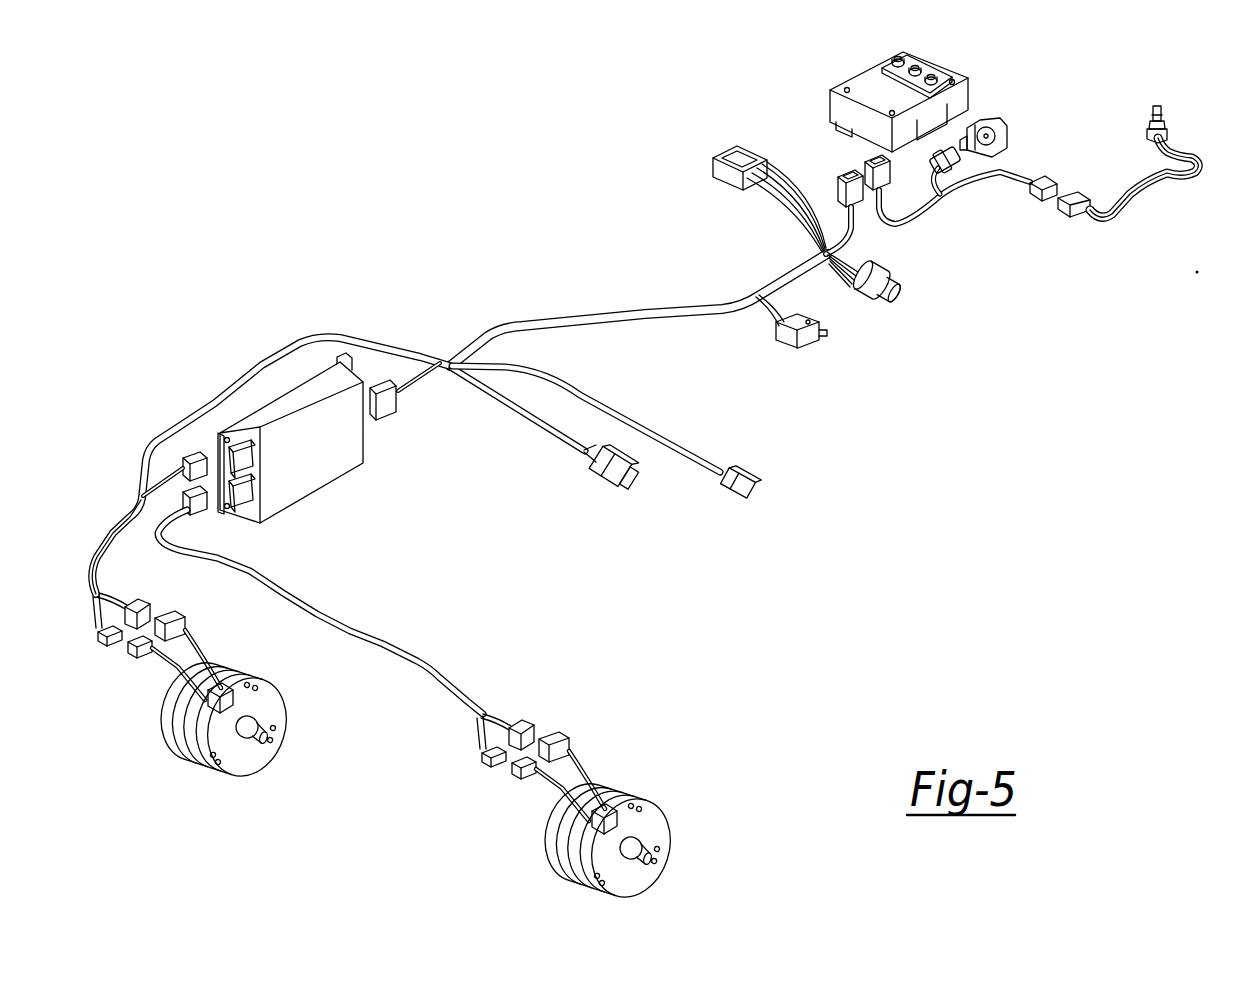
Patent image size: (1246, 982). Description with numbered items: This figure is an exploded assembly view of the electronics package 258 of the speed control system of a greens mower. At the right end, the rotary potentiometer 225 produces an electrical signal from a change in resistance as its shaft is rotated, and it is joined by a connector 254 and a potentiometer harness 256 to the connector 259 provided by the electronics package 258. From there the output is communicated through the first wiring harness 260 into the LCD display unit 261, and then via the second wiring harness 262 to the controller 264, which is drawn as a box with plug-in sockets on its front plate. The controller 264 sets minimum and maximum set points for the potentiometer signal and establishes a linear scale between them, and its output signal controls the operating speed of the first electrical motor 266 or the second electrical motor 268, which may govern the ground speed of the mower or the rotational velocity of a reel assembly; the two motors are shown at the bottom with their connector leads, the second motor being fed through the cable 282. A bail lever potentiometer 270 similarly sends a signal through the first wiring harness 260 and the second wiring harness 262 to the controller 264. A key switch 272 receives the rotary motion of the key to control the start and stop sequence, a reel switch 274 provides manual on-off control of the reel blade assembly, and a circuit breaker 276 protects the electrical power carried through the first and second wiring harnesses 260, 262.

The rotary potentiometer 225 is at (1168, 132).
The connector 254 is at (1060, 204).
The potentiometer harness 256 is at (1103, 222).
The electronics package 258 is at (462, 280).
The connector 259 is at (1050, 186).
The first wiring harness 260 is at (913, 206).
The LCD display unit 261 is at (862, 86).
The second wiring harness 262 is at (594, 322).
The controller 264 is at (320, 460).
The first electrical motor 266 is at (177, 727).
The second electrical motor 268 is at (560, 847).
The bail lever potentiometer 270 is at (988, 122).
The key switch 272 is at (873, 290).
The reel switch 274 is at (727, 180).
The circuit breaker 276 is at (780, 334).
The motor cable 282 is at (373, 636).